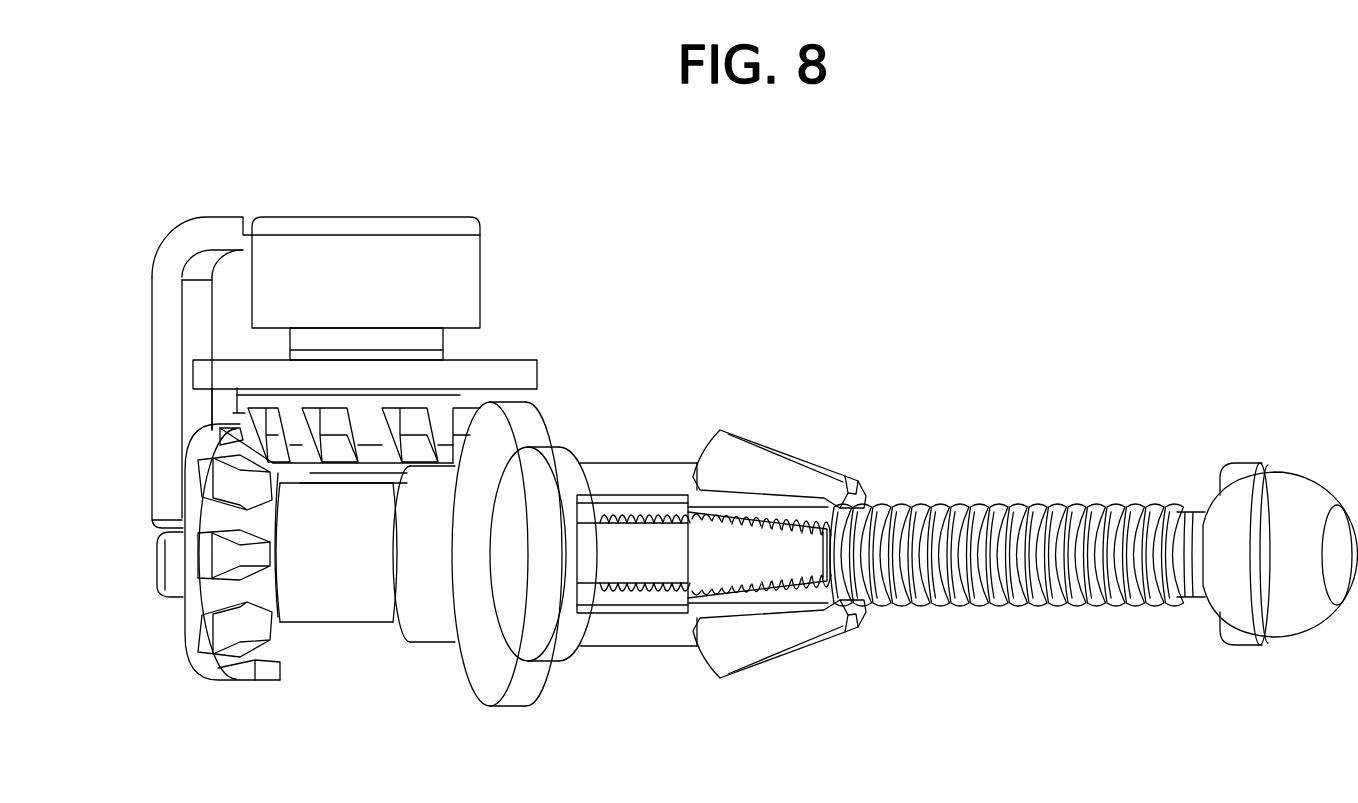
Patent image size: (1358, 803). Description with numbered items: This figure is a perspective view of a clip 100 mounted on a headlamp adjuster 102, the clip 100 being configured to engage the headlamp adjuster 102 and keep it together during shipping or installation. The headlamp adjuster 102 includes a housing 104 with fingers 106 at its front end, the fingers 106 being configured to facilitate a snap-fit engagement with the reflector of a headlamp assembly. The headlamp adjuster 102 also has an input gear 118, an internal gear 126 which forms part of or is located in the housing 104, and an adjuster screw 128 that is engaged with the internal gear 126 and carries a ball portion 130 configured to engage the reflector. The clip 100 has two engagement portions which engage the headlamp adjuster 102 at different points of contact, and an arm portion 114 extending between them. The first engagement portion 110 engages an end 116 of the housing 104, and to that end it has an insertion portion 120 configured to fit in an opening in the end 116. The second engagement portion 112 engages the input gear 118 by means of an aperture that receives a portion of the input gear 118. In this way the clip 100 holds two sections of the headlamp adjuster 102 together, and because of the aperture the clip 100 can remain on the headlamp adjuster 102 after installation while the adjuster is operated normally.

The clip 100 is at (151, 248).
The headlamp adjuster 102 is at (876, 481).
The housing 104 is at (470, 690).
The fingers 106 is at (737, 450).
The first engagement portion 110 is at (150, 599).
The second engagement portion 112 is at (444, 213).
The arm portion 114 is at (160, 375).
The end 116 is at (185, 625).
The input gear 118 is at (277, 340).
The insertion portion 120 is at (158, 540).
The internal gear 126 is at (250, 682).
The adjuster screw 128 is at (1046, 617).
The ball portion 130 is at (1292, 640).